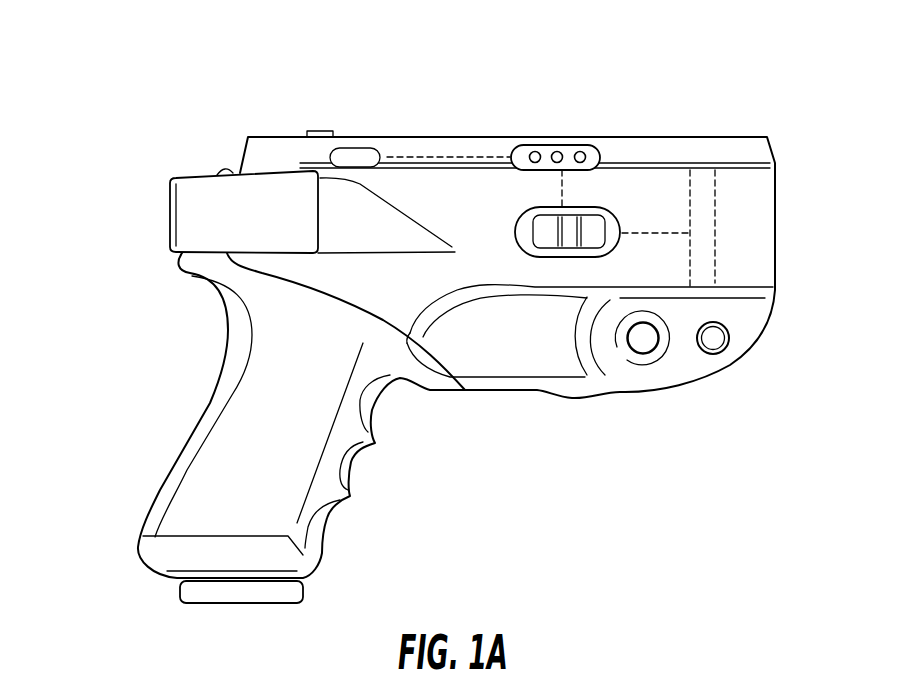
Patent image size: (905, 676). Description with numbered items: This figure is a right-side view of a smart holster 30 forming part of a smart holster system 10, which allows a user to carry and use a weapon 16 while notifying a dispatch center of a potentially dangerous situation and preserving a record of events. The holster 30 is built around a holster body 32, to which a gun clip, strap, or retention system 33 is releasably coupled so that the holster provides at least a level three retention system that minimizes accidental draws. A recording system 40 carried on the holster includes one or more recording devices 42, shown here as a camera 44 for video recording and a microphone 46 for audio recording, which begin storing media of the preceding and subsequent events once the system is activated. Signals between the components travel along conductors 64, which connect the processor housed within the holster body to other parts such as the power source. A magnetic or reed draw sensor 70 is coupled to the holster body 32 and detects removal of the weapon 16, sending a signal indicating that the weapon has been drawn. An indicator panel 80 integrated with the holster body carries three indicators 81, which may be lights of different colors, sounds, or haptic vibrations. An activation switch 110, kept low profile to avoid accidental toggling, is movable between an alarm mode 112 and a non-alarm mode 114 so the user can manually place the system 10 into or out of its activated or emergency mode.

The smart holster system 10 is at (100, 77).
The weapon 16 is at (223, 423).
The smart holster 30 is at (703, 137).
The holster body 32 is at (508, 350).
The retention system 33 is at (224, 226).
The recording system 40 is at (292, 100).
The recording devices 42 is at (362, 98).
The camera 44 is at (320, 131).
The microphone 46 is at (332, 83).
The conductors 64 is at (476, 160).
The draw sensor 70 is at (700, 237).
The indicator panel 80 is at (544, 124).
The indicators 81 is at (580, 151).
The activation switch 110 is at (600, 258).
The alarm mode 112 is at (540, 258).
The non-alarm mode 114 is at (603, 207).